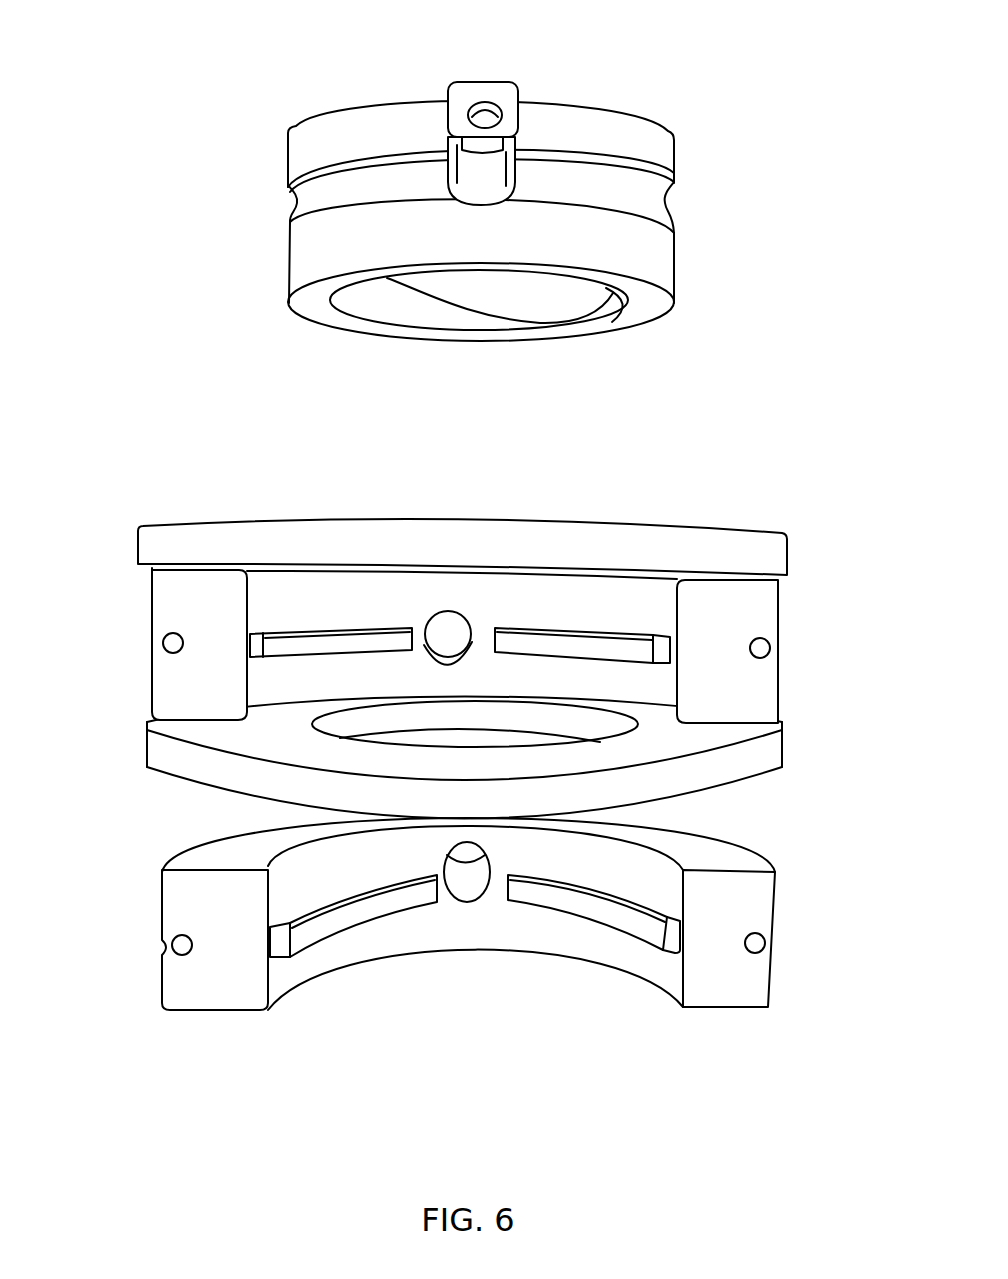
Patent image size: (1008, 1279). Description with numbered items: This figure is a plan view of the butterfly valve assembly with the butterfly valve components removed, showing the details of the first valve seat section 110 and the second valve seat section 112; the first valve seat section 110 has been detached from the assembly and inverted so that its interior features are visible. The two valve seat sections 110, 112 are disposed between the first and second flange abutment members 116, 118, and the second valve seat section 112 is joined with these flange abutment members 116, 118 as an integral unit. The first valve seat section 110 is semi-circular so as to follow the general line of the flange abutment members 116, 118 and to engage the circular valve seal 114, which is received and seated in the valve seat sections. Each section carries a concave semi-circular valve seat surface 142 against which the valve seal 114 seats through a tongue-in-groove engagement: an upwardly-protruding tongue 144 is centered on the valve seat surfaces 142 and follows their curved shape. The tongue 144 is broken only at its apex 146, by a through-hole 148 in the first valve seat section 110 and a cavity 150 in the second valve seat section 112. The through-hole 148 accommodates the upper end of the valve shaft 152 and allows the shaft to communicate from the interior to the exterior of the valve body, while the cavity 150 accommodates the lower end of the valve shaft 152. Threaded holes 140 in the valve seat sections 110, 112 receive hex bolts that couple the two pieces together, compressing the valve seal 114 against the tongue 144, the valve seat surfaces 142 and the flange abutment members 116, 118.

The first valve seat section 110 is at (649, 1032).
The second valve seat section 112 is at (278, 595).
The valve seal 114 is at (643, 147).
The first flange abutment member 116 is at (770, 773).
The second flange abutment member 118 is at (770, 555).
The threaded hole 140 is at (165, 640).
The valve seat surface 142 is at (523, 615).
The tongue 144 is at (323, 640).
The apex 146 is at (478, 596).
The through-hole 148 is at (460, 888).
The cavity 150 is at (455, 612).
The valve shaft 152 is at (493, 90).